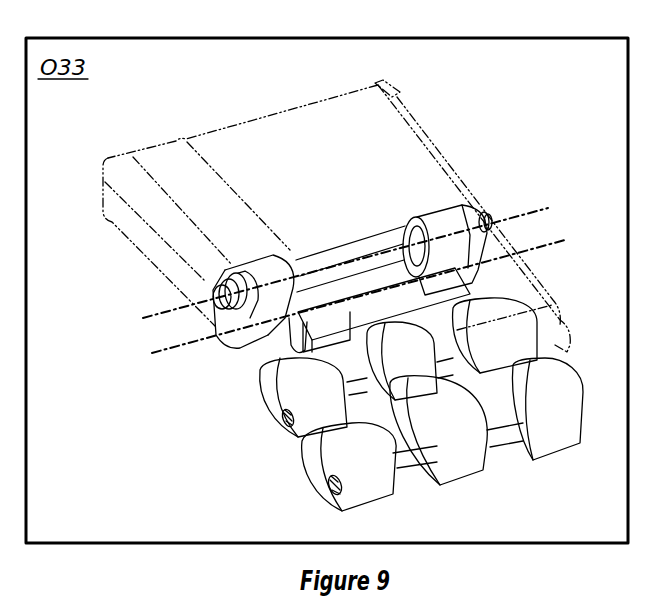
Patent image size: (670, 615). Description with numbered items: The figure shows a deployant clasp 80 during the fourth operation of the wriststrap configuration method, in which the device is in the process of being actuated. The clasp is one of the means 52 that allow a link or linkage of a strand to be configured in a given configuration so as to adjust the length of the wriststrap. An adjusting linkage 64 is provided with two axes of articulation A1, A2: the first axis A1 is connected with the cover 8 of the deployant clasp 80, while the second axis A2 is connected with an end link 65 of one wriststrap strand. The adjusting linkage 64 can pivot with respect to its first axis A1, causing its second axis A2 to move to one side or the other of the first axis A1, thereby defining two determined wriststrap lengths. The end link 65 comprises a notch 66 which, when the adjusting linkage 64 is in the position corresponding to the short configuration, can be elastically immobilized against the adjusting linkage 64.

The cover 8 is at (259, 145).
The deployant clasp 80 is at (198, 118).
The means for configuring a link or linkage 52 is at (124, 352).
The adjusting linkage 64 is at (256, 272).
The end link 65 is at (437, 306).
The notch 66 is at (297, 327).
The first axis of articulation A1 is at (136, 320).
The second axis of articulation A2 is at (175, 349).